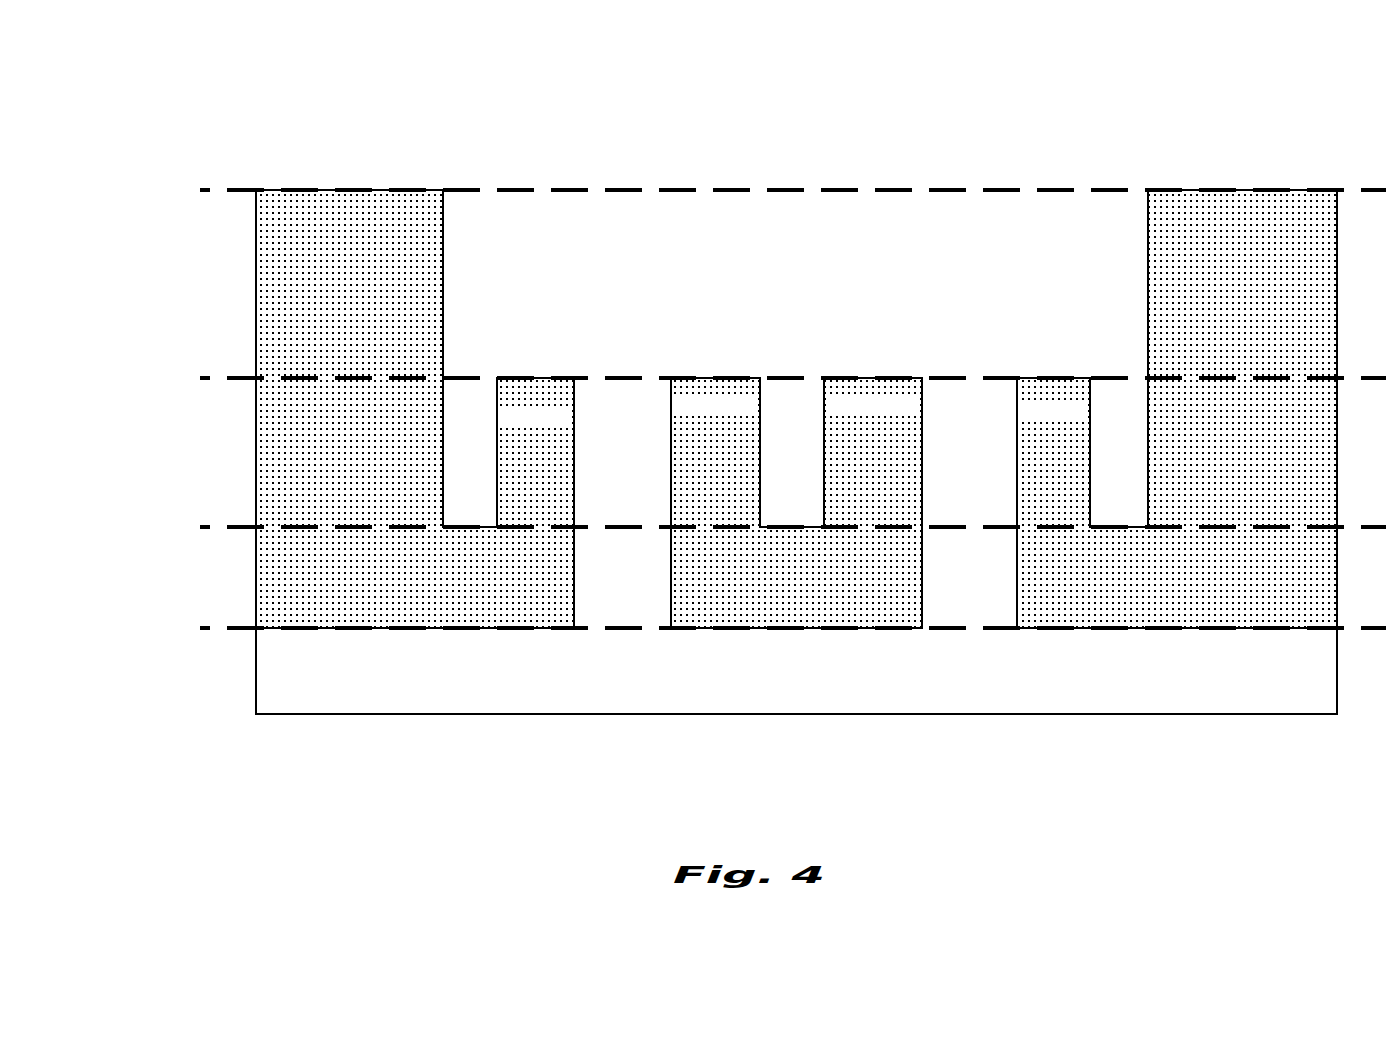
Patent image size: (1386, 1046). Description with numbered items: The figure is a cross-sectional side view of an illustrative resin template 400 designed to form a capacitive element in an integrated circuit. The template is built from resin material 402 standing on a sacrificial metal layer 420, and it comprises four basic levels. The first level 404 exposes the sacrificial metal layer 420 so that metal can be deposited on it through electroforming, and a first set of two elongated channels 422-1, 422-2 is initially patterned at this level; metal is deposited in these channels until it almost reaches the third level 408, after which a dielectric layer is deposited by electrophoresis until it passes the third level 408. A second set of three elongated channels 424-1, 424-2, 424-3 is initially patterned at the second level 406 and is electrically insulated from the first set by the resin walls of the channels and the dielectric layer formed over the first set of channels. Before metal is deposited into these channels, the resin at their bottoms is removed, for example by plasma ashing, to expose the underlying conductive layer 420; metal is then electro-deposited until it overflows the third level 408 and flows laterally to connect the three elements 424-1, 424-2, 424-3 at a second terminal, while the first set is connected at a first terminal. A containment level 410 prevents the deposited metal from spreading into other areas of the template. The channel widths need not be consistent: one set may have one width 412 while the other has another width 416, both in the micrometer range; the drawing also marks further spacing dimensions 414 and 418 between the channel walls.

The resin template 400 is at (179, 80).
The dielectric material 402 is at (330, 470).
The first level 404 is at (718, 629).
The second level 406 is at (718, 528).
The third level 408 is at (718, 379).
The containment level 410 is at (719, 189).
The width 412 is at (671, 443).
The distance D2 414 is at (760, 405).
The width 416 is at (443, 443).
The distance D4 418 is at (497, 415).
The sacrificial metal layer 420 is at (770, 682).
The first elongated channel 422-1 is at (591, 592).
The second elongated channel 422-2 is at (934, 592).
The elongated channel of second set 424-1 is at (447, 356).
The elongated channel of second set 424-2 is at (760, 356).
The elongated channel of second set 424-3 is at (1147, 356).